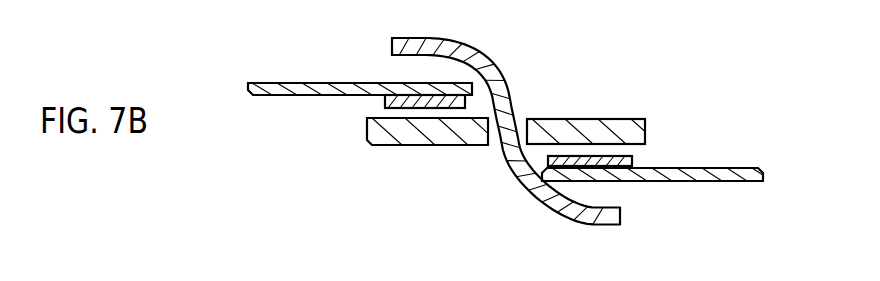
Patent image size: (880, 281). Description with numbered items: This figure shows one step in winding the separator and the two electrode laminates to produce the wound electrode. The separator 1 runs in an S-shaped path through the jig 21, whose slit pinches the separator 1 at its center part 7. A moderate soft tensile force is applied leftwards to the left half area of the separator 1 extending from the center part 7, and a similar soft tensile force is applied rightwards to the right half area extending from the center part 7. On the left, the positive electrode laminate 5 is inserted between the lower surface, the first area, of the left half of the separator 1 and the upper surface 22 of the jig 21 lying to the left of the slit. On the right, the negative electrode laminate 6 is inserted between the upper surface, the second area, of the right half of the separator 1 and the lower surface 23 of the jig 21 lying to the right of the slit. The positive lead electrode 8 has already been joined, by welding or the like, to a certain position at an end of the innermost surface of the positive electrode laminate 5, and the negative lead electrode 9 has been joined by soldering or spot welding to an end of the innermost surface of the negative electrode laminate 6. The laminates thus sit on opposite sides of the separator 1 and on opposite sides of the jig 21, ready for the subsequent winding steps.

The separator 1 is at (467, 58).
The positive electrode laminate 5 is at (281, 82).
The negative electrode laminate 6 is at (725, 170).
The center part 7 is at (506, 128).
The positive lead electrode 8 is at (412, 100).
The negative lead electrode 9 is at (607, 160).
The jig 21 is at (547, 135).
The upper surface 22 is at (377, 116).
The lower surface 23 is at (633, 148).